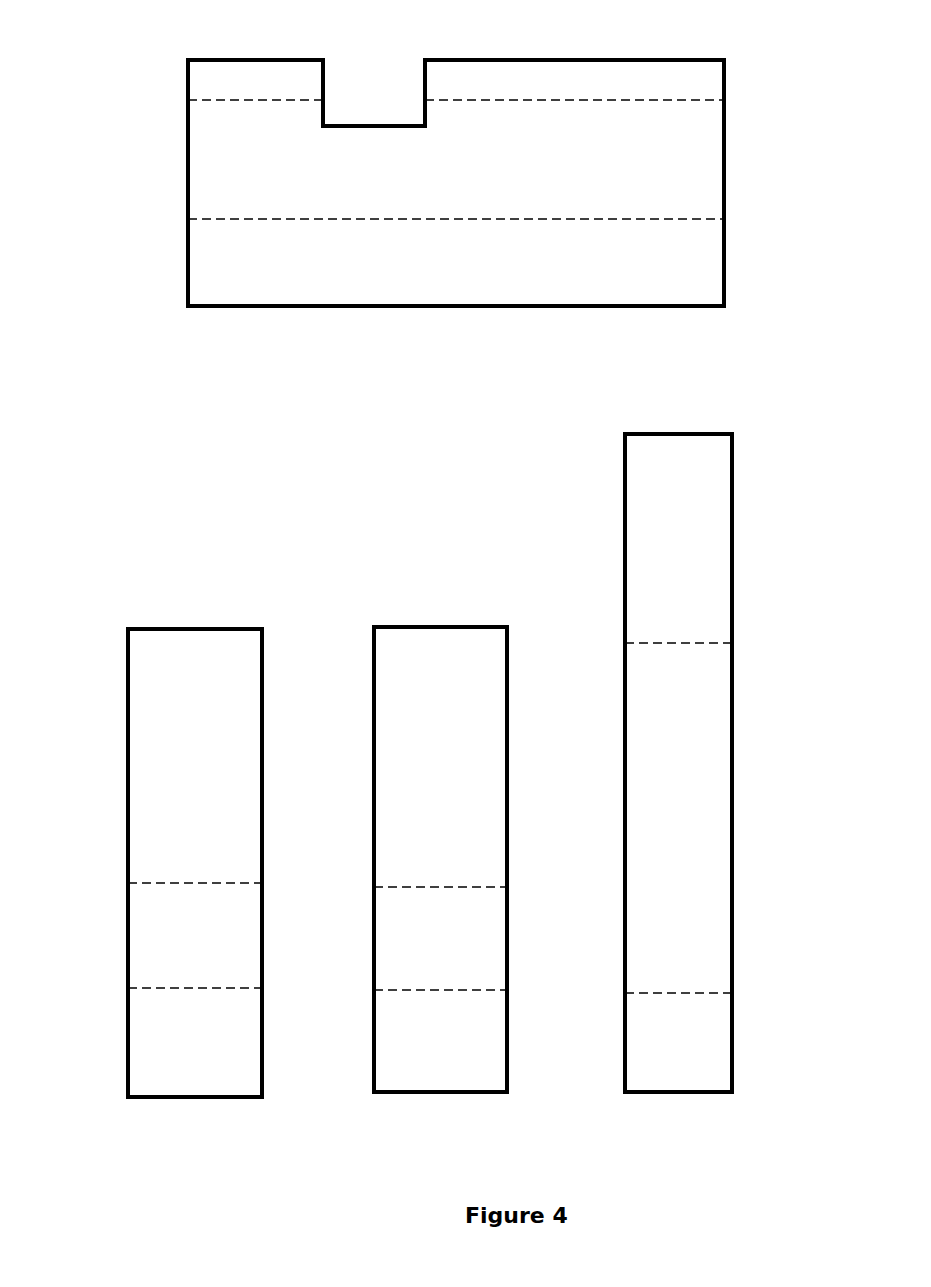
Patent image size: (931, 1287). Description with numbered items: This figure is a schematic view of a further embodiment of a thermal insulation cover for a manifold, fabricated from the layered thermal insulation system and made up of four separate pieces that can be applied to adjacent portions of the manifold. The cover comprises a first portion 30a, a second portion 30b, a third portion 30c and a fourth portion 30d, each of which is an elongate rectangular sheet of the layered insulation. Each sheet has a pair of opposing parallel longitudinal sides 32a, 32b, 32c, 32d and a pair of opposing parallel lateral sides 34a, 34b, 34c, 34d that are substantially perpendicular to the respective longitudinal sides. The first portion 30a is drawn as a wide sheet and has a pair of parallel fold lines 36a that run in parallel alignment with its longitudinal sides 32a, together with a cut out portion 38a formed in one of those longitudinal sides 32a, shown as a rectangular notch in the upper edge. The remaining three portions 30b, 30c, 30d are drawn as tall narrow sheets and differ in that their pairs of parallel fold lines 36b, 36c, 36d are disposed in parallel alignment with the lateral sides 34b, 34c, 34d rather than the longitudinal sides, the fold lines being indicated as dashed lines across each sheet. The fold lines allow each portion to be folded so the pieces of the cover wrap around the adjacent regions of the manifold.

The portion 30a is at (317, 282).
The longitudinal sides 32a is at (570, 308).
The lateral sides 34a is at (727, 168).
The fold lines 36a is at (488, 104).
The cut out portion 38a is at (359, 80).
The portion 30b is at (157, 727).
The longitudinal sides 32b is at (127, 810).
The lateral sides 34b is at (150, 628).
The fold lines 36b is at (182, 886).
The portion 30c is at (453, 1073).
The longitudinal sides 32c is at (373, 667).
The lateral sides 34c is at (420, 627).
The fold lines 36c is at (418, 888).
The portion 30d is at (705, 730).
The longitudinal sides 32d is at (733, 510).
The lateral sides 34d is at (678, 1095).
The fold lines 36d is at (660, 643).